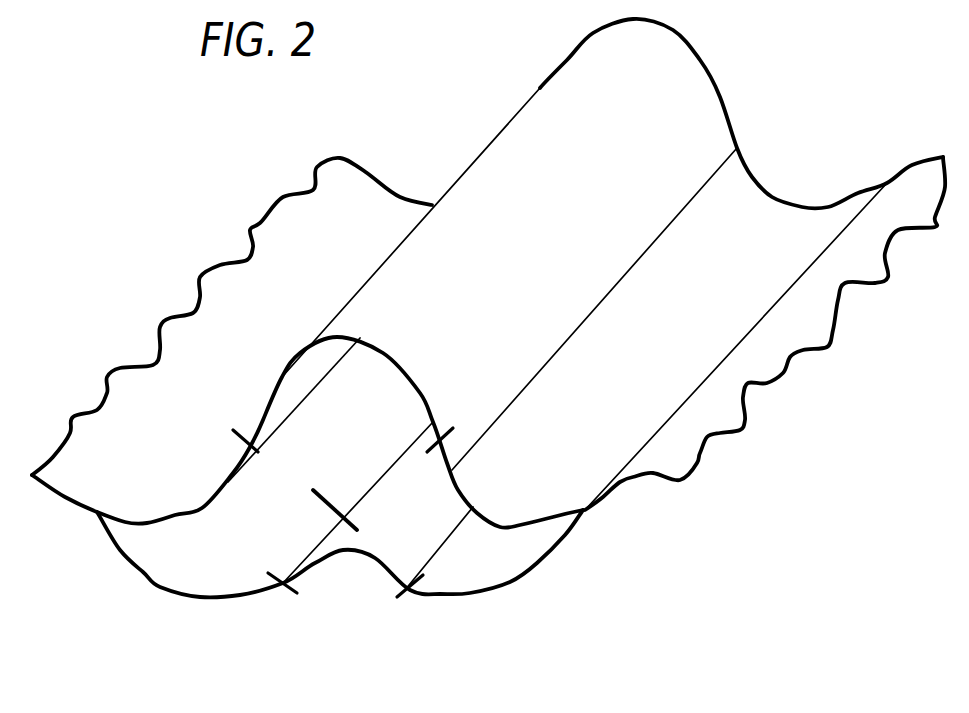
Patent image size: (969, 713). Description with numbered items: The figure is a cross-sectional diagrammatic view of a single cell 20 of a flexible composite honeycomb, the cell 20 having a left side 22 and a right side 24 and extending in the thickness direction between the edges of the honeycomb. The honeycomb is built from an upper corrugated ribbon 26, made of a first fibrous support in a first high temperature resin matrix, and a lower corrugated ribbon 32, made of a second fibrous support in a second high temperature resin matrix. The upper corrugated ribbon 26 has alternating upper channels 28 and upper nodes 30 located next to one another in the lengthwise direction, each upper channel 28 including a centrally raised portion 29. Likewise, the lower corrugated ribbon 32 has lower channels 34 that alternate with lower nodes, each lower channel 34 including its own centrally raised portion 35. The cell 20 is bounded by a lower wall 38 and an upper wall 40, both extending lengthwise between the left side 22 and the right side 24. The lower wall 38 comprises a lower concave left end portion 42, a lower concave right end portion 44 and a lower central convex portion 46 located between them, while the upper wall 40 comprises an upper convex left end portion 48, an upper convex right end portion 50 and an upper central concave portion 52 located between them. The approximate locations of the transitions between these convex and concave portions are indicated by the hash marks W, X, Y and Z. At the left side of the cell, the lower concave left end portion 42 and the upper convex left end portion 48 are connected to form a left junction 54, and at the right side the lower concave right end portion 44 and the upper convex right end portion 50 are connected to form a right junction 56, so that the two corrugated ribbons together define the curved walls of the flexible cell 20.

The cell 20 is at (557, 339).
The left side 22 is at (149, 547).
The right side 24 is at (565, 533).
The upper corrugated ribbon 26 is at (183, 517).
The upper channel 28 is at (274, 242).
The centrally raised portion 29 is at (206, 367).
The upper node 30 is at (673, 98).
The lower corrugated ribbon 32 is at (120, 543).
The lower channel 34 is at (324, 501).
The centrally raised portion 35 is at (397, 503).
The lower wall 38 is at (197, 597).
The upper wall 40 is at (468, 493).
The lower concave left end portion 42 is at (144, 574).
The lower concave right end portion 44 is at (485, 596).
The lower central convex portion 46 is at (377, 560).
The upper convex left end portion 48 is at (200, 512).
The upper convex right end portion 50 is at (505, 523).
The upper central concave portion 52 is at (362, 343).
The left junction 54 is at (98, 510).
The right junction 56 is at (587, 508).
The hash mark w W is at (248, 441).
The hash mark x X is at (435, 443).
The hash mark y Y is at (410, 597).
The hash mark z Z is at (282, 590).